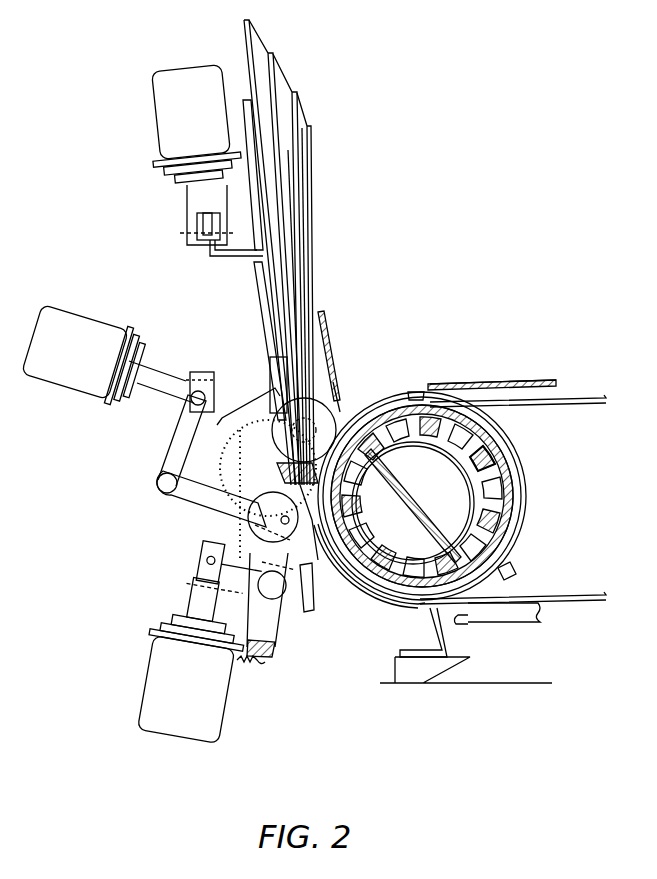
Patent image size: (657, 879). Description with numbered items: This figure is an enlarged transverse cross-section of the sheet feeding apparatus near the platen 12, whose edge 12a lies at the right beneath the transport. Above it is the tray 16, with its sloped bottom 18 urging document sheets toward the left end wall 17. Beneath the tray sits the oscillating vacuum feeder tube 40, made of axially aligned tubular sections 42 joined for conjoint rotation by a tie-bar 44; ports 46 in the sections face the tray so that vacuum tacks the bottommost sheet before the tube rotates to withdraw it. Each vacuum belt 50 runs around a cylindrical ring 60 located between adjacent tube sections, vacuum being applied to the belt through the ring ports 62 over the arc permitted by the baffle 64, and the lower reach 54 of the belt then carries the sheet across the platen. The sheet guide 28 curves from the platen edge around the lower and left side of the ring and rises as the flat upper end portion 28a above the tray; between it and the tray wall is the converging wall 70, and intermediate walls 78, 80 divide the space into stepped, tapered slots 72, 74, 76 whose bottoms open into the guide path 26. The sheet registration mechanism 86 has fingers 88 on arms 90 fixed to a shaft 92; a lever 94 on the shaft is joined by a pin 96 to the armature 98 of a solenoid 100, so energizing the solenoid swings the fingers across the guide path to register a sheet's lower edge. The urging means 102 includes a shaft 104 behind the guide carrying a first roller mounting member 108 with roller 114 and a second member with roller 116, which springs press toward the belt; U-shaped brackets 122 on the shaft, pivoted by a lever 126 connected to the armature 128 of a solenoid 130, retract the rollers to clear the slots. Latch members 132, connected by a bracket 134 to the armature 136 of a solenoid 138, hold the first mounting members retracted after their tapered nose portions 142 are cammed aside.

The platen 12 is at (466, 643).
The platen edge 12a is at (466, 629).
The tray 16 is at (518, 380).
The left wall of tray 17 is at (328, 334).
The tray bottom 18 is at (498, 380).
The guide path 26 is at (351, 478).
The sheet guide 28 is at (340, 598).
The upper end portion of sheet guide 28a is at (269, 284).
The oscillating vacuum feeder tube 40 is at (451, 483).
The tubular sections 42 is at (517, 459).
The tie-bar 44 is at (508, 567).
The ports 46 is at (413, 390).
The vacuum belts 50 is at (592, 397).
The lower reach 54 is at (566, 595).
The cylindrical ring 60 is at (521, 482).
The ring ports 62 is at (492, 453).
The baffle 64 is at (514, 535).
The wall 70 is at (313, 156).
The slot 72 is at (264, 34).
The slot 74 is at (285, 68).
The slot 76 is at (303, 108).
The intermediate wall 78 is at (294, 212).
The intermediate wall 80 is at (302, 184).
The sheet registration mechanism 86 is at (143, 419).
The fingers 88 is at (303, 559).
The arms 90 is at (211, 502).
The shaft 92 is at (156, 480).
The lever 94 is at (178, 432).
The pin 96 is at (200, 376).
The armature 98 is at (159, 367).
The solenoid 100 is at (84, 355).
The urging means 102 is at (191, 619).
The shaft 104 is at (289, 620).
The first roller mounting member 108 is at (278, 652).
The roller 114 is at (334, 384).
The roller 116 is at (344, 510).
The U-shaped bracket 122 is at (302, 600).
The lever 126 is at (207, 564).
The armature 128 is at (174, 592).
The solenoid 130 is at (183, 639).
The latch members 132 is at (248, 441).
The bracket 134 is at (258, 298).
The armature 136 is at (185, 203).
The solenoid 138 is at (193, 125).
The tapered nose portions 142 is at (252, 455).